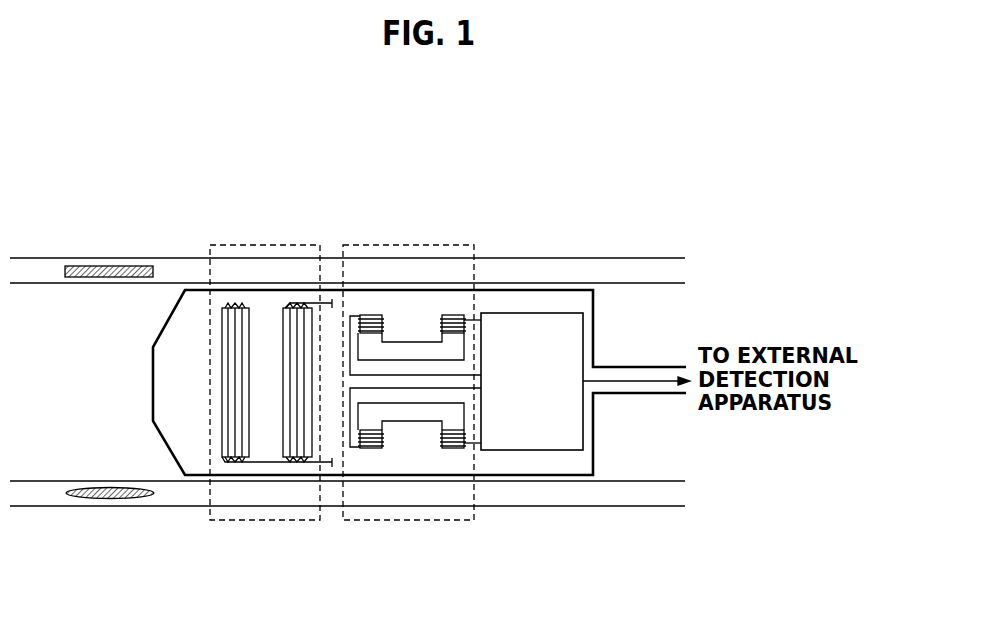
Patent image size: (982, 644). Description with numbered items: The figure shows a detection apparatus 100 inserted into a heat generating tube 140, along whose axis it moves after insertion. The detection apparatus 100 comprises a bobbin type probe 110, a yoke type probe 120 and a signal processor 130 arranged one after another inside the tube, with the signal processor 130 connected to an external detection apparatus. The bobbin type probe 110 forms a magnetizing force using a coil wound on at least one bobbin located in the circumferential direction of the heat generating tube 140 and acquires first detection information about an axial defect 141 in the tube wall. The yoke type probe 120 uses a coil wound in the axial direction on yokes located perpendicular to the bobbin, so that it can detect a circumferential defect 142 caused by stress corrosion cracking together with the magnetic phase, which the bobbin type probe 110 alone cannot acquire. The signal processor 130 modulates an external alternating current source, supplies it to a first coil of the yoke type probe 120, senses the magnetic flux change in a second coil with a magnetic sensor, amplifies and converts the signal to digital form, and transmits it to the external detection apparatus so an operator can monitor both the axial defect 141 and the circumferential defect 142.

The detection apparatus 100 is at (153, 383).
The bobbin type probe 110 is at (263, 245).
The yoke type probe 120 is at (398, 245).
The signal processor 130 is at (535, 450).
The heat generating tube 140 is at (523, 258).
The axial defect 141 is at (107, 270).
The circumferential defect 142 is at (108, 500).